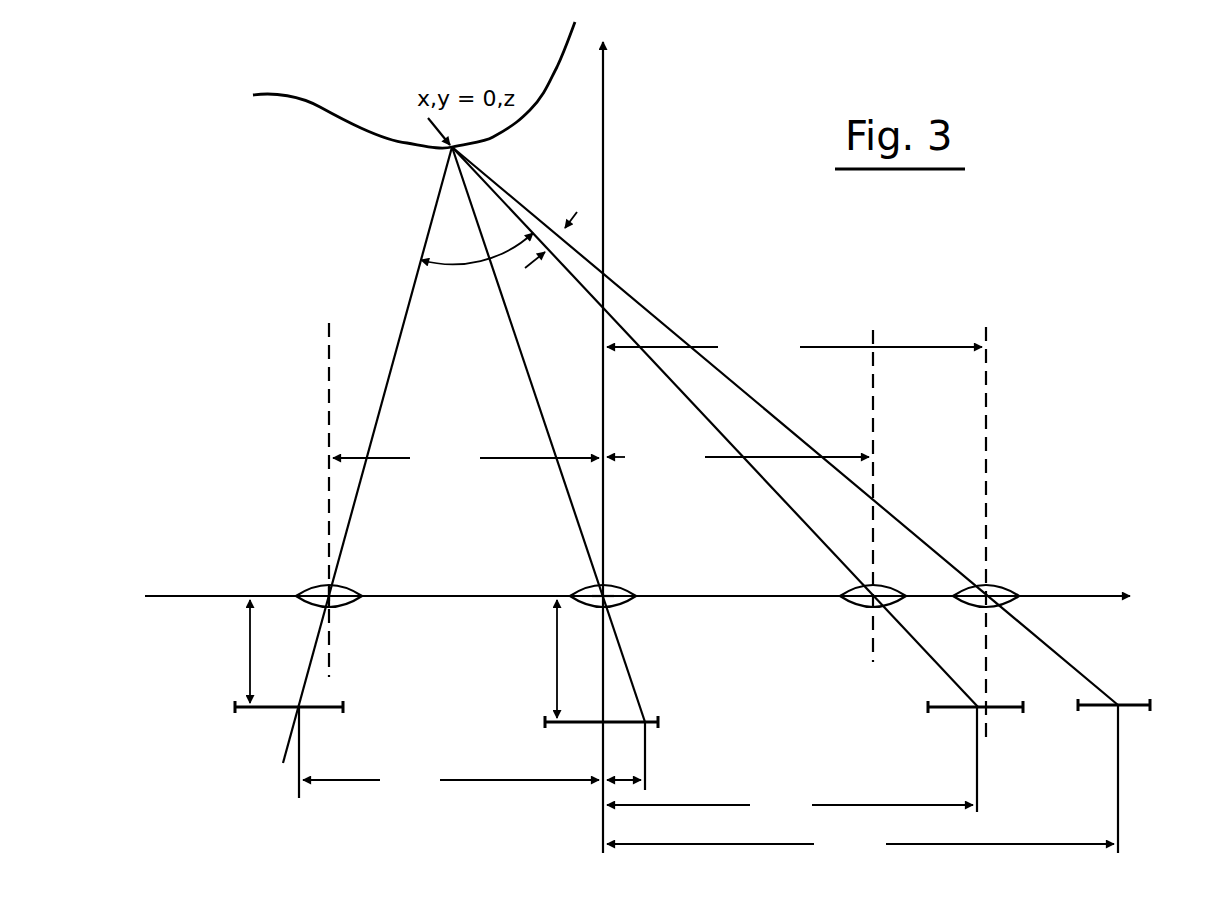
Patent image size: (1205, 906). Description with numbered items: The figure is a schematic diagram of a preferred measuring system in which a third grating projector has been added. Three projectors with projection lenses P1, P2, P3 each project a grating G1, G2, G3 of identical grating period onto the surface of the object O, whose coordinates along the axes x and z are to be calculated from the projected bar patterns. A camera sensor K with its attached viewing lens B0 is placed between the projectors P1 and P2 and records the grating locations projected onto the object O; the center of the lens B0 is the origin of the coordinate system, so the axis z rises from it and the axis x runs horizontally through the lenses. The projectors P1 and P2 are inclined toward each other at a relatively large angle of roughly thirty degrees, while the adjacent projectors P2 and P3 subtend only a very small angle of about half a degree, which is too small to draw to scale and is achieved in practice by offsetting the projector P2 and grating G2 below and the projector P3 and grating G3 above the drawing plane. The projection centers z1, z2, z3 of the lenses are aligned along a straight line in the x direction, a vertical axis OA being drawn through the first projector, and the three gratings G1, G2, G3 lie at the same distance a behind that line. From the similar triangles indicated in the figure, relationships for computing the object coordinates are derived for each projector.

The object O is at (325, 108).
The optical axis of first objective OA is at (322, 484).
The first projection lens P1 is at (298, 588).
The second projection lens P2 is at (845, 590).
The third projection lens P3 is at (978, 582).
The projection center of first projection lens z1 is at (327, 586).
The projection center of second projection lens z2 is at (868, 607).
The projection center of third projection lens z3 is at (975, 607).
The viewing lens B0 is at (615, 598).
The camera sensor K is at (583, 725).
The first grating G1 is at (280, 712).
The second grating G2 is at (1012, 708).
The third grating G3 is at (1140, 708).
The grating distance a is at (248, 651).
The x coordinate x is at (637, 615).
The z coordinate z is at (620, 443).